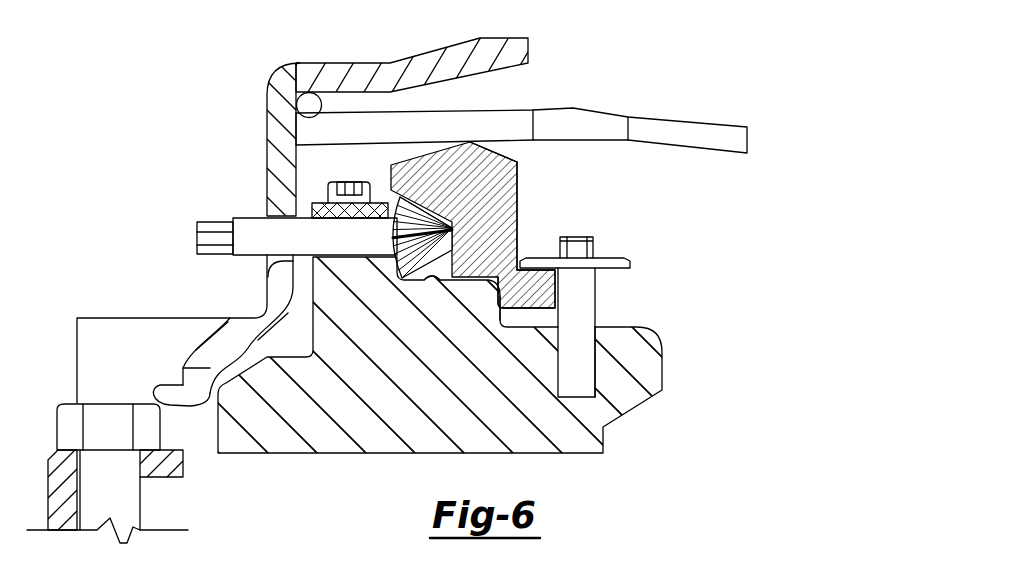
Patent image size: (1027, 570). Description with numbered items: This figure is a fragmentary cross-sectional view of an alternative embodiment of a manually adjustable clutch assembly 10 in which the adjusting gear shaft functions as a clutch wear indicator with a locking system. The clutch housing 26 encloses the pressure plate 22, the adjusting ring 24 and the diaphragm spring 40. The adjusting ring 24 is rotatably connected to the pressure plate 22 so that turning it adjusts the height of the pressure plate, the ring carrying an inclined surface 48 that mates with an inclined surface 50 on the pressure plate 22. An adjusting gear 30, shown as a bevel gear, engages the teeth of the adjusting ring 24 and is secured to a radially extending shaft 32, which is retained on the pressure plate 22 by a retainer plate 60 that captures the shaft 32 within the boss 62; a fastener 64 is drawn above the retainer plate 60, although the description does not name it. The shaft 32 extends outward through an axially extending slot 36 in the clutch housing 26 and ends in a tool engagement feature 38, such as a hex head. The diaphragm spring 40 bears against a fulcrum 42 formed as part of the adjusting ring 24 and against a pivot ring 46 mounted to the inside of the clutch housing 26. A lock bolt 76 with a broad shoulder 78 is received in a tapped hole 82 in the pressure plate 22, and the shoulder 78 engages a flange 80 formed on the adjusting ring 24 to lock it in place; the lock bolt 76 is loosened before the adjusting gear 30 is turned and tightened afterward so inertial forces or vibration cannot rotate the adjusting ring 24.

The manually adjustable clutch assembly 10 is at (203, 123).
The pressure plate 22 is at (657, 368).
The adjusting ring 24 is at (513, 173).
The clutch housing 26 is at (395, 65).
The adjusting gear 30 is at (467, 240).
The shaft 32 is at (245, 222).
The axially extending slot 36 is at (268, 262).
The tool engagement feature 38 is at (201, 238).
The diaphragm spring 40 is at (678, 125).
The fulcrum 42 is at (468, 143).
The pivot ring 46 is at (302, 103).
The inclined surface 48 is at (470, 290).
The inclined surface 50 is at (433, 280).
The retainer plate 60 is at (312, 210).
The boss 62 is at (430, 239).
The nut 64 is at (350, 187).
The lock bolt 76 is at (590, 310).
The broad shoulder 78 is at (630, 263).
The flange 80 is at (527, 290).
The tapped hole 82 is at (595, 358).